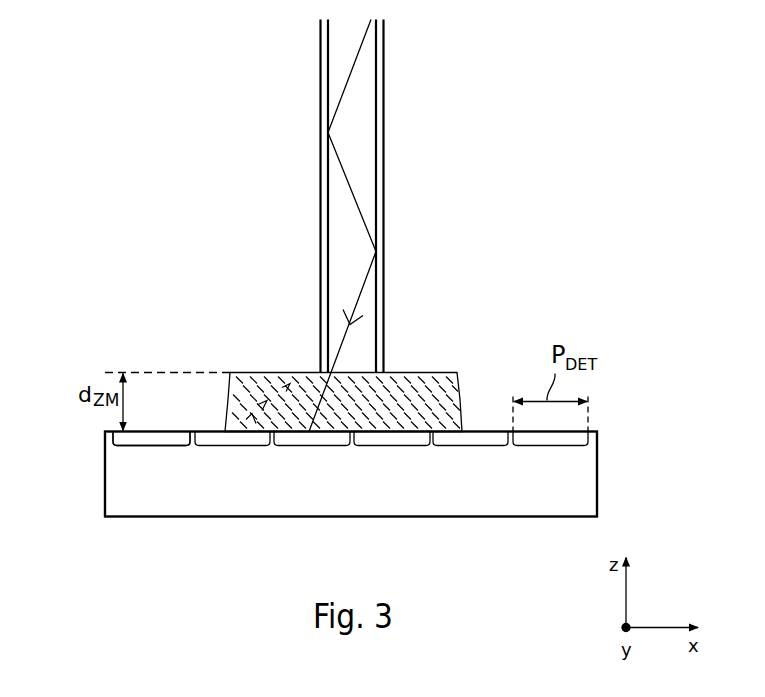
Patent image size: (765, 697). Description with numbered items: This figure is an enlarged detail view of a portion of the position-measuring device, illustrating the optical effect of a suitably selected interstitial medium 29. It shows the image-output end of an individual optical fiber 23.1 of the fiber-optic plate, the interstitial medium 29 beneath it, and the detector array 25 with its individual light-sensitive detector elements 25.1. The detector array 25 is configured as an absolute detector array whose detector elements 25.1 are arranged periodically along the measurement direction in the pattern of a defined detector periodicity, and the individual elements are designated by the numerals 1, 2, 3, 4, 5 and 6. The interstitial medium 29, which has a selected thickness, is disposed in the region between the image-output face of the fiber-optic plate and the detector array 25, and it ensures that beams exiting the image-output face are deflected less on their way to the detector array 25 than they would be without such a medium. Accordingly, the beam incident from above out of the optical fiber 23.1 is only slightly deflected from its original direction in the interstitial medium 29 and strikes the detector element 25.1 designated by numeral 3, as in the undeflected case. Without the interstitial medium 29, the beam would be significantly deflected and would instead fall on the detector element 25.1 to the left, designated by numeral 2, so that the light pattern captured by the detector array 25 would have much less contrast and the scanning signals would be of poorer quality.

The optical fiber 23.1 is at (377, 157).
The interstitial medium 29 is at (431, 373).
The detector array 25 is at (597, 497).
The detector element 25.1 is at (118, 437).
The detector element 1 is at (151, 451).
The detector element 2 is at (232, 451).
The detector element 3 is at (312, 451).
The detector element 4 is at (392, 451).
The detector element 5 is at (470, 451).
The detector element 6 is at (550, 451).